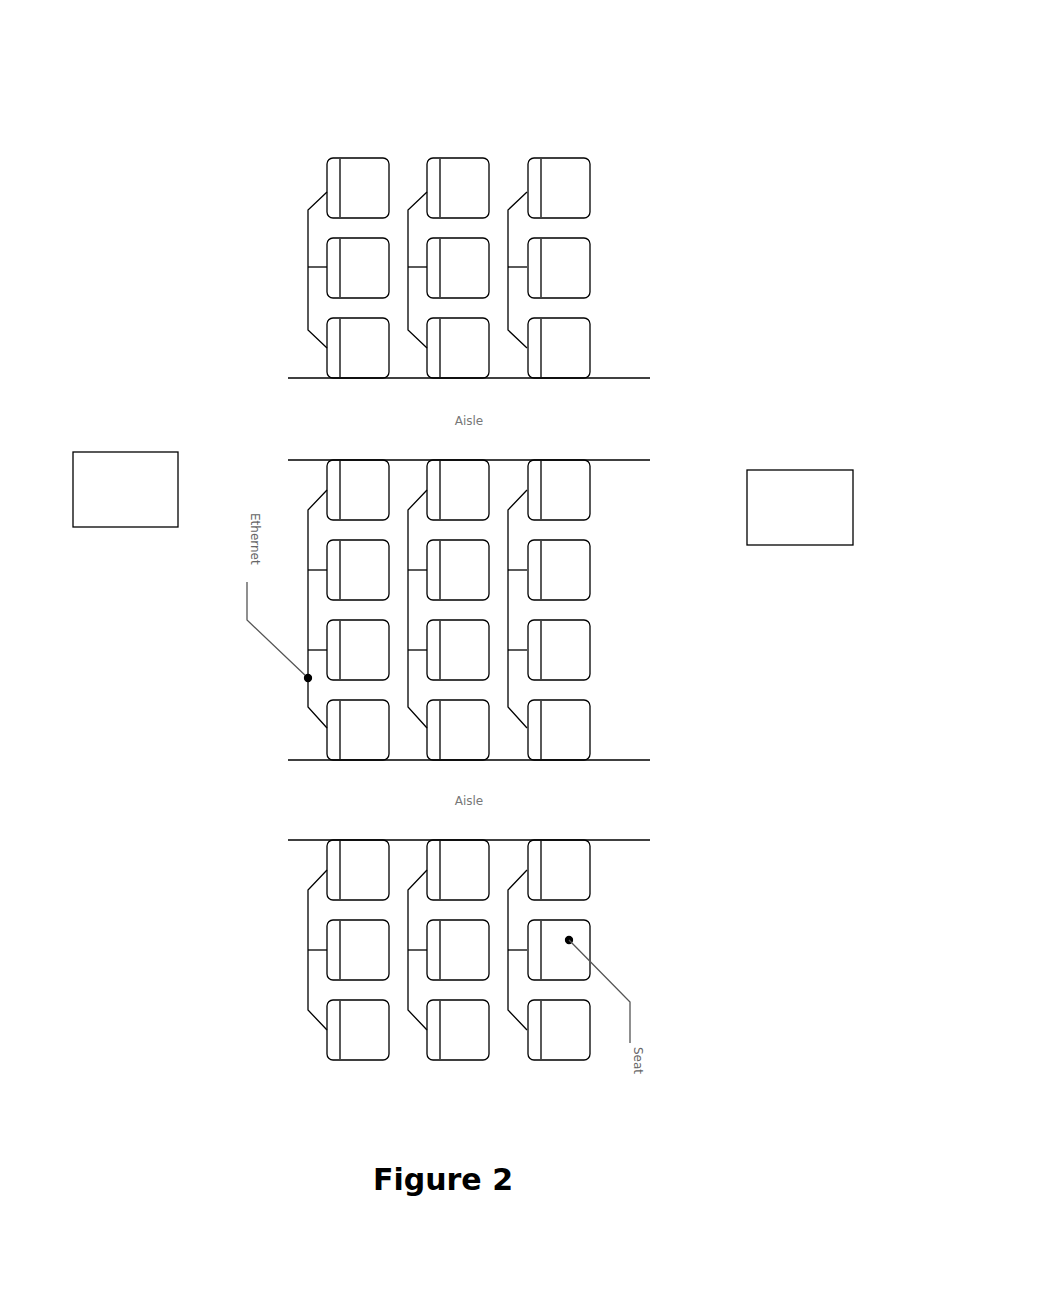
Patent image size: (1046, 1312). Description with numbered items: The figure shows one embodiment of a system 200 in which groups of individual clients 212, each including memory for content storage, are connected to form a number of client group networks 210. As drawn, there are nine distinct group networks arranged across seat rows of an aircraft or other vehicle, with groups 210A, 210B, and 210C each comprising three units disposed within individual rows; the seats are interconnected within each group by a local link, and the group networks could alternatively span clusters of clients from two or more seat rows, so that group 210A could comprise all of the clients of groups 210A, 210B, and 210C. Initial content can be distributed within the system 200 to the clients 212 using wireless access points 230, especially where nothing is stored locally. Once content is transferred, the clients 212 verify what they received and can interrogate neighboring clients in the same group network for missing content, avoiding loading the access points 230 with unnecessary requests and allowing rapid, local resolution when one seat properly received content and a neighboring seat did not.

The system 200 is at (800, 73).
The client group network 210 is at (800, 507).
The client group network 210A is at (622, 221).
The client group network 210B is at (490, 130).
The client group network 210C is at (272, 163).
The client 212 is at (633, 372).
The wireless access point 230 is at (125, 489).